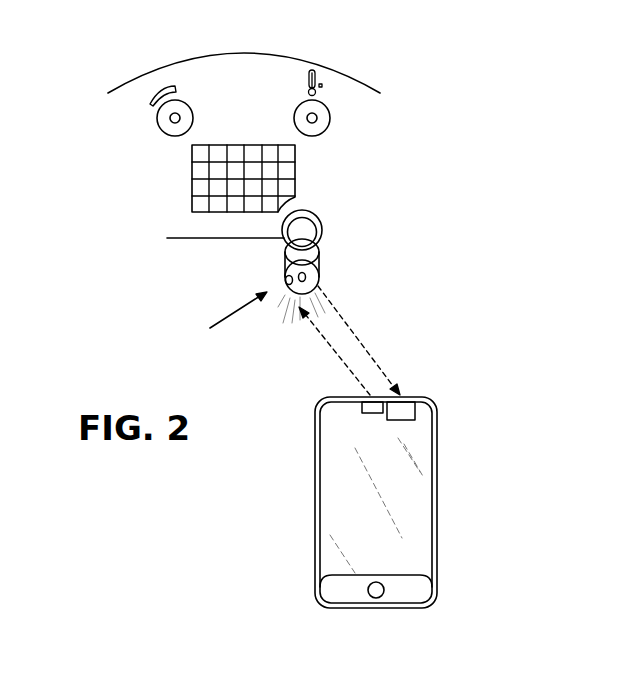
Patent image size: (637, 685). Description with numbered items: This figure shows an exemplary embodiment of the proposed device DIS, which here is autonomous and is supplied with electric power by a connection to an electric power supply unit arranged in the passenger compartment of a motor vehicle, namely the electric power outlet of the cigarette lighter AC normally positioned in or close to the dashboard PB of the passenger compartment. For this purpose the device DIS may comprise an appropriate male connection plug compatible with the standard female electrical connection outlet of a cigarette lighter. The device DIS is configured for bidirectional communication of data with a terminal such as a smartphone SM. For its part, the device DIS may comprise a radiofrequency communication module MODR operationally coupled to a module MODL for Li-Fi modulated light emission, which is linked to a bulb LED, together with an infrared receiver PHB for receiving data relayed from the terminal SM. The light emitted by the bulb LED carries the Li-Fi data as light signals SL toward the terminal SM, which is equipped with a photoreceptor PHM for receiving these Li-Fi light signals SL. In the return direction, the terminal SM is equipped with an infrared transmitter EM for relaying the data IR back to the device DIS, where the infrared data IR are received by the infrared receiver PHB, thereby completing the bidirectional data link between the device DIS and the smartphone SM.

The dashboard PB is at (280, 83).
The cigarette lighter AC is at (307, 230).
The radiofrequency communication module MODR is at (303, 233).
The module for Li-Fi modulated light emission MODL is at (303, 252).
The photodetector PHB is at (288, 278).
The bulb LED is at (305, 277).
The device DIS is at (220, 321).
The data relayed by infrared IR is at (320, 337).
The light signals SL is at (368, 355).
The smartphone SM is at (405, 495).
The infrared transmitter EM is at (367, 410).
The photoreceptor PHM is at (390, 412).